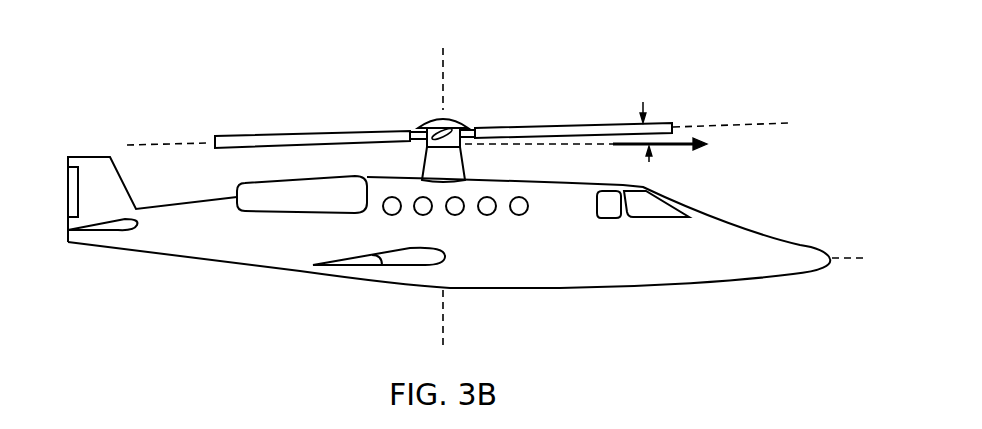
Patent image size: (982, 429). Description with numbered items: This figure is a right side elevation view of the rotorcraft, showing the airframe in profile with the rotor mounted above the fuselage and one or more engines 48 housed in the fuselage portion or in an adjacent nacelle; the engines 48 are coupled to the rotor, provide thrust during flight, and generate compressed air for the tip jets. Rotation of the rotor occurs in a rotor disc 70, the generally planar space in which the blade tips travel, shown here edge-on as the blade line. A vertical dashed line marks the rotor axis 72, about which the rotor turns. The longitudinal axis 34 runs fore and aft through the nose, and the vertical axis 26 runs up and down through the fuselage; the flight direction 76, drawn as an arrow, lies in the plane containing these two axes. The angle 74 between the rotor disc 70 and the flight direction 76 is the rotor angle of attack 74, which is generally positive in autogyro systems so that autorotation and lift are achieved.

The engine 48 is at (285, 135).
The rotor mast axis 72 is at (446, 67).
The rotor disc 70 is at (760, 123).
The rotor angle of attack 74 is at (643, 100).
The flight direction 76 is at (678, 149).
The longitudinal axis 34 is at (843, 260).
The vertical axis 26 is at (446, 318).